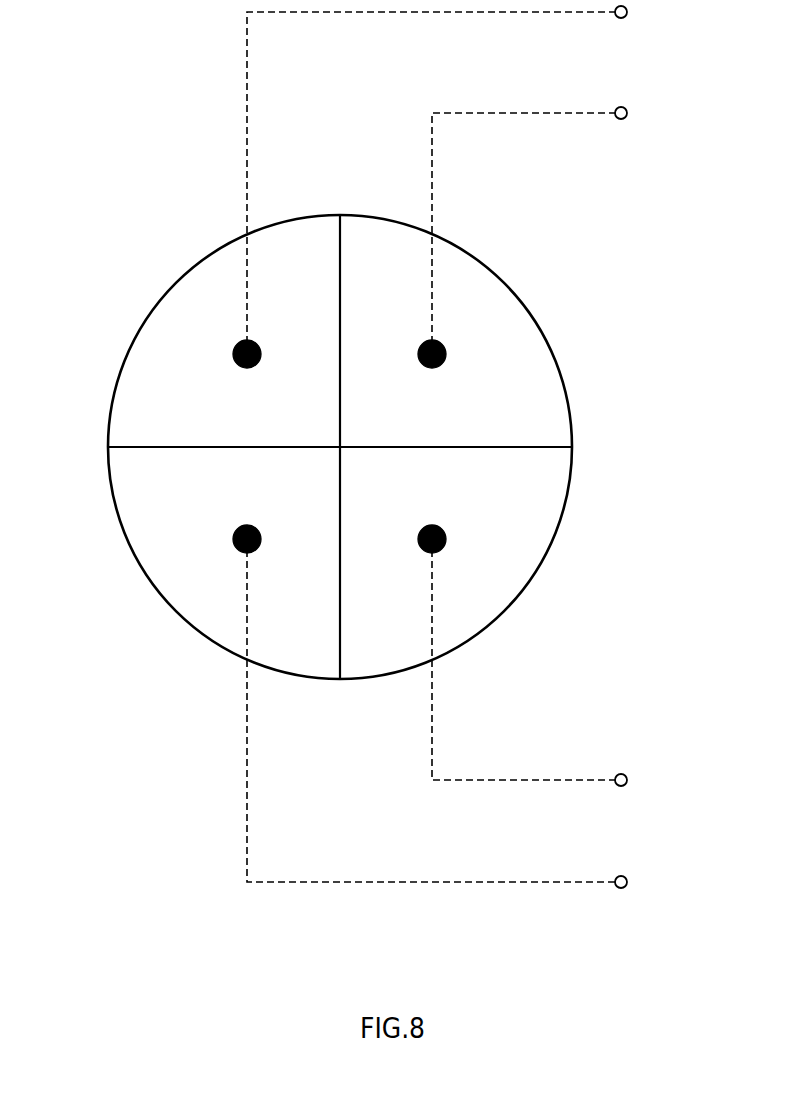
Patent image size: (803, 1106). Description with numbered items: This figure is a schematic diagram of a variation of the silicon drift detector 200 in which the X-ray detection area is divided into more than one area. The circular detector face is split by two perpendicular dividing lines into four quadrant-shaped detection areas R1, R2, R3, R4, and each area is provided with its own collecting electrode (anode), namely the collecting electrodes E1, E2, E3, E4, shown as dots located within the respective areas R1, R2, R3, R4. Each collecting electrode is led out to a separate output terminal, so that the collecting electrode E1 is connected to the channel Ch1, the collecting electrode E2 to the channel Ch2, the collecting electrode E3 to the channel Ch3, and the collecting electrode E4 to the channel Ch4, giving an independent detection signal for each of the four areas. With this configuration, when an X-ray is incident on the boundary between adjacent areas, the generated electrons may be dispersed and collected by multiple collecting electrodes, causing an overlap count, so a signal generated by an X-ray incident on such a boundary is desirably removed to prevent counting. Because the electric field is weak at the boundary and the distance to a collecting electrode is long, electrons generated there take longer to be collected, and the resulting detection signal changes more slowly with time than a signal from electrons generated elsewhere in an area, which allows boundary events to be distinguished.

The silicon drift detector 200 is at (573, 413).
The collecting electrode E1 is at (238, 345).
The collecting electrode E2 is at (441, 345).
The collecting electrode E3 is at (442, 548).
The collecting electrode E4 is at (238, 548).
The X-ray detection area R1 is at (215, 285).
The X-ray detection area R2 is at (465, 285).
The X-ray detection area R3 is at (512, 545).
The X-ray detection area R4 is at (170, 546).
The channel Ch1 is at (466, 177).
The channel Ch2 is at (559, 227).
The channel Ch3 is at (559, 666).
The channel Ch4 is at (466, 717).